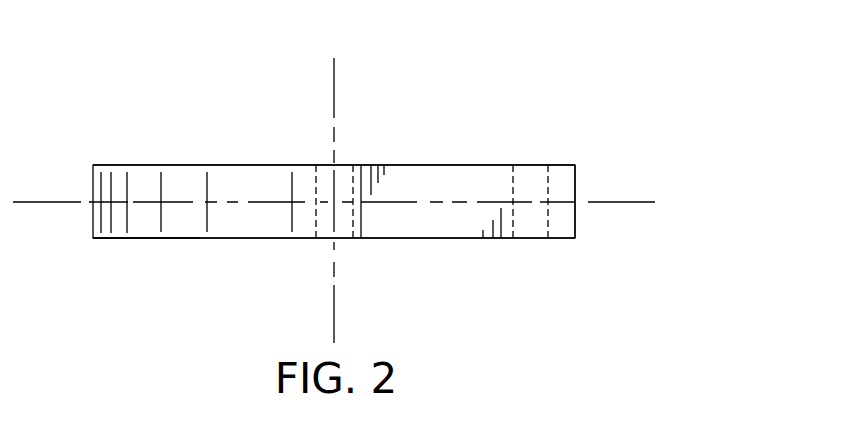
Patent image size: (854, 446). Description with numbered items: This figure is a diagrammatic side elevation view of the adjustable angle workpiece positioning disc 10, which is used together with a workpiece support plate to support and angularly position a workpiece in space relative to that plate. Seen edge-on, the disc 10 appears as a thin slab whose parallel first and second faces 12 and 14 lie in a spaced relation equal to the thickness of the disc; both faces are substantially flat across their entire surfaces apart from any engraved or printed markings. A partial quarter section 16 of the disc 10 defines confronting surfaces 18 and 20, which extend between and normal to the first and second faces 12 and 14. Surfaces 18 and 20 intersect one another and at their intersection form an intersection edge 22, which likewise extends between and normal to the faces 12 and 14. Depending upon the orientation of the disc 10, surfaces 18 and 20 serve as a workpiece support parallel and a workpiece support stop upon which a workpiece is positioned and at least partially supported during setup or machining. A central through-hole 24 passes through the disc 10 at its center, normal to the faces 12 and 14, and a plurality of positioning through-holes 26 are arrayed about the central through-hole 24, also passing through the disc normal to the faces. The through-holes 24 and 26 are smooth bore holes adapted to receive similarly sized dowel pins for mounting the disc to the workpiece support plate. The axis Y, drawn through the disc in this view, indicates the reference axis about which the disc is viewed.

The adjustable angle workpiece positioning disc 10 is at (488, 107).
The first face 12 is at (148, 165).
The second face 14 is at (132, 238).
The partial quarter section 16 is at (497, 180).
The confronting surface 18 is at (484, 238).
The confronting surface 20 is at (361, 235).
The intersection edge 22 is at (367, 165).
The central through-hole 24 is at (316, 187).
The positioning through-holes 26 is at (550, 183).
The axis Y is at (351, 200).